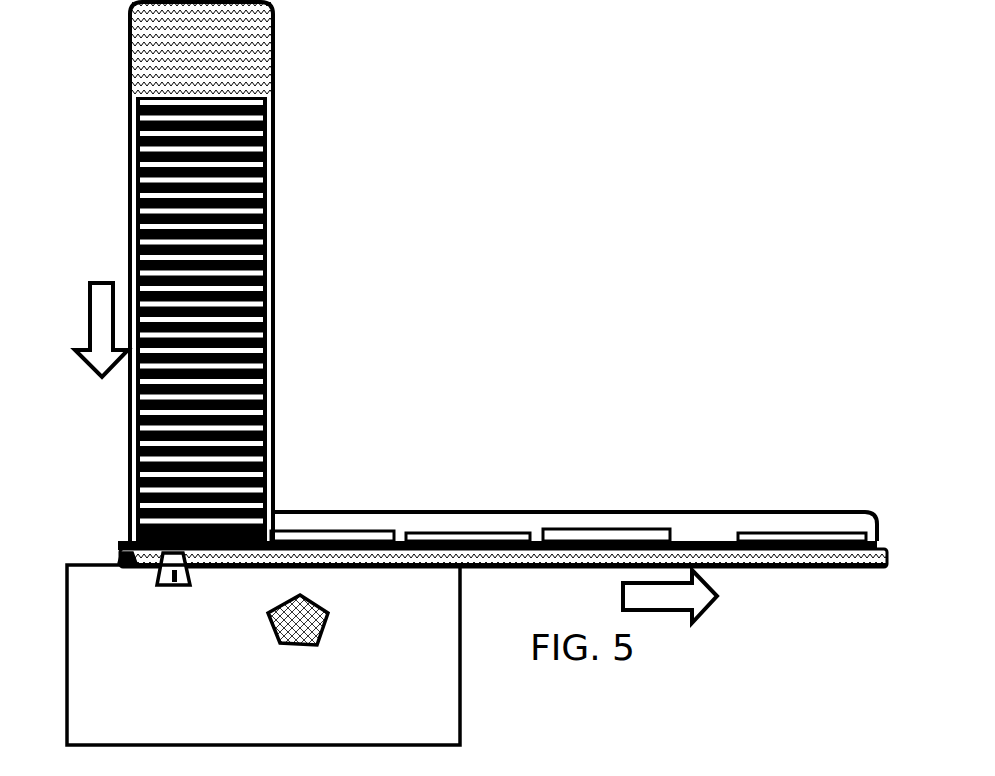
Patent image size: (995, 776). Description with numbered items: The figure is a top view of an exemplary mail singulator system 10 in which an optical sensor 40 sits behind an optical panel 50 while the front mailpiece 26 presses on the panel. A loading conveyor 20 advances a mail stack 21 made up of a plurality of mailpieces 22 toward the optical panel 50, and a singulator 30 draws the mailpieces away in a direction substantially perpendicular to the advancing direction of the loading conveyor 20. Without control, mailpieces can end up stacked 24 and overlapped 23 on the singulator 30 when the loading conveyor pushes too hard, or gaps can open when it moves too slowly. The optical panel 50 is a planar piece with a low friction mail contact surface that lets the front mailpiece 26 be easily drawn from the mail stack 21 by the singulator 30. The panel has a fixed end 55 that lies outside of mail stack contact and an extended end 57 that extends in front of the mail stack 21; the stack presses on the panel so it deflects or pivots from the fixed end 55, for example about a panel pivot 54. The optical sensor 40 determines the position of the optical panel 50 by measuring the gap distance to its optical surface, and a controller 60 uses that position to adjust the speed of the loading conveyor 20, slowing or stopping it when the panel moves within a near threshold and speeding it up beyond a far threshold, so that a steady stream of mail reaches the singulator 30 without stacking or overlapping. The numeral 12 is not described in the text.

The mail singulator system 10 is at (497, 276).
The magazine 12 is at (272, 350).
The loading conveyor 20 is at (272, 57).
The mail stack 21 is at (260, 319).
The mailpieces 22 is at (272, 145).
The overlapped mailpieces 23 is at (613, 537).
The stacked mailpieces 24 is at (466, 540).
The front mailpiece 26 is at (137, 538).
The singulator 30 is at (425, 567).
The optical sensor 40 is at (175, 573).
The optical panel 50 is at (152, 553).
The panel pivot 54 is at (120, 553).
The fixed end 55 is at (157, 537).
The extended end 57 is at (203, 565).
The controller 60 is at (290, 642).